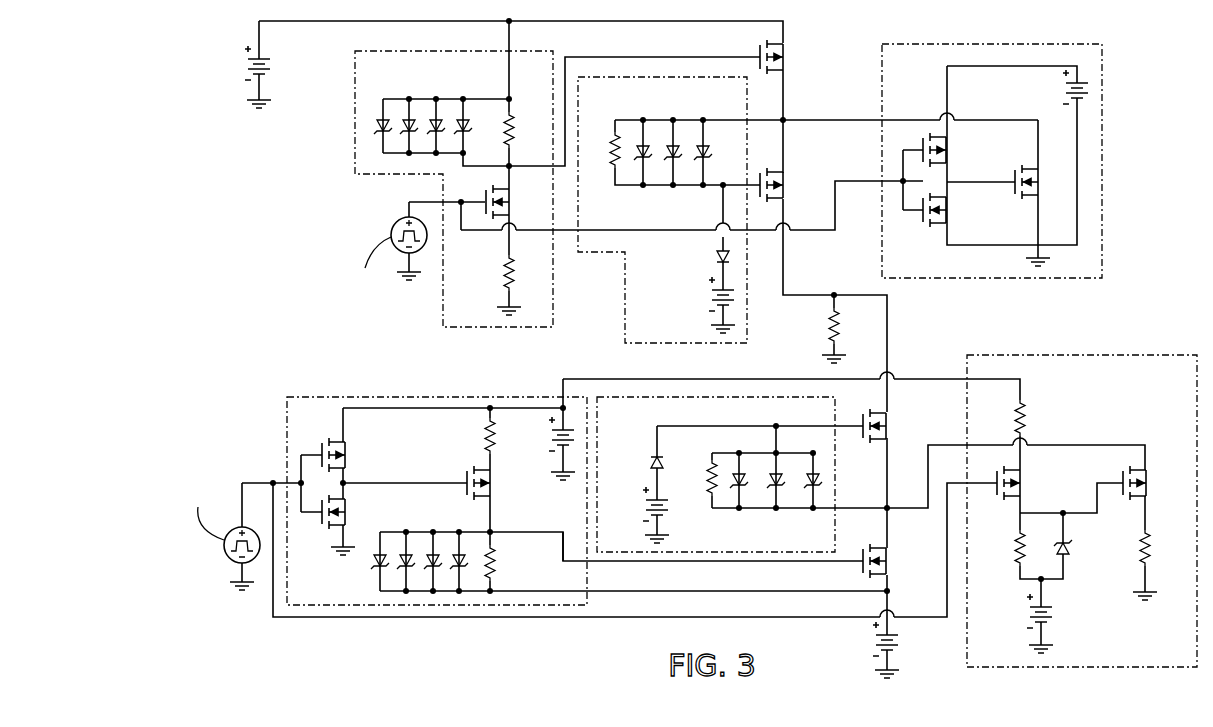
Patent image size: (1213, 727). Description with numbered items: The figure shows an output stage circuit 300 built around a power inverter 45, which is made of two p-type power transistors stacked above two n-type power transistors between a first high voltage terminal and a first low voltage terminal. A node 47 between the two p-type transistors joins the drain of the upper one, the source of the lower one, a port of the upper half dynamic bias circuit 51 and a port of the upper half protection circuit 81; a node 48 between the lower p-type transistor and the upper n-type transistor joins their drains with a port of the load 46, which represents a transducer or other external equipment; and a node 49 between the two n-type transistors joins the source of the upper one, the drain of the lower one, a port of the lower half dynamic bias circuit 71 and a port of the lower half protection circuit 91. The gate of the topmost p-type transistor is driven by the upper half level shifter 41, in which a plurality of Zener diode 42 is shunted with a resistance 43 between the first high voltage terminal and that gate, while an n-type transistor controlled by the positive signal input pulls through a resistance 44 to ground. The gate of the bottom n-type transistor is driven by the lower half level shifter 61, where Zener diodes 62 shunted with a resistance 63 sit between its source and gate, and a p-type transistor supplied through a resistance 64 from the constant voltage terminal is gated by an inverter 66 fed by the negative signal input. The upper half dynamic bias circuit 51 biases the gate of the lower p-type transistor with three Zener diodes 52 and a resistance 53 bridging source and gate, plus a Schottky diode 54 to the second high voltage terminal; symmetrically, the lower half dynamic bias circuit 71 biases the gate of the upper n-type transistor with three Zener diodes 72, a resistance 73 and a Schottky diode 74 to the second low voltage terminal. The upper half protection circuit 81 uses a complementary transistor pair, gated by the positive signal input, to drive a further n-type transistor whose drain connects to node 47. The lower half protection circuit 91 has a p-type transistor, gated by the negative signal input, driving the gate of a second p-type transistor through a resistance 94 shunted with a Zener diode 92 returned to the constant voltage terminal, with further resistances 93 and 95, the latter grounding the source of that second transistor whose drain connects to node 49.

The output stage circuit 300 is at (237, 254).
The upper half level shifter 41 is at (355, 151).
The Zener diode 42 is at (475, 96).
The resistance 43 is at (514, 127).
The resistance 44 is at (503, 270).
The power inverter 45 is at (804, 38).
The load 46 is at (826, 327).
The node 47 is at (786, 118).
The node 48 is at (835, 292).
The node 49 is at (892, 511).
The upper half dynamic bias circuit 51 is at (625, 303).
The Zener diodes 52 is at (630, 110).
The resistance 53 is at (610, 146).
The Schottky diode 54 is at (715, 257).
The lower half level shifter 61 is at (372, 397).
The Zener diodes 62 is at (468, 525).
The resistance 63 is at (496, 564).
The resistance 64 is at (484, 438).
The inverter 66 is at (307, 442).
The lower half dynamic bias circuit 71 is at (837, 491).
The Zener diodes 72 is at (728, 518).
The resistance 73 is at (707, 479).
The Schottky diode 74 is at (650, 461).
The upper half protection circuit 81 is at (1104, 123).
The lower half protection circuit 91 is at (1120, 355).
The Zener diode 92 is at (1070, 553).
The resistance 93 is at (1026, 420).
The resistance 94 is at (1015, 549).
The resistance 95 is at (1150, 549).